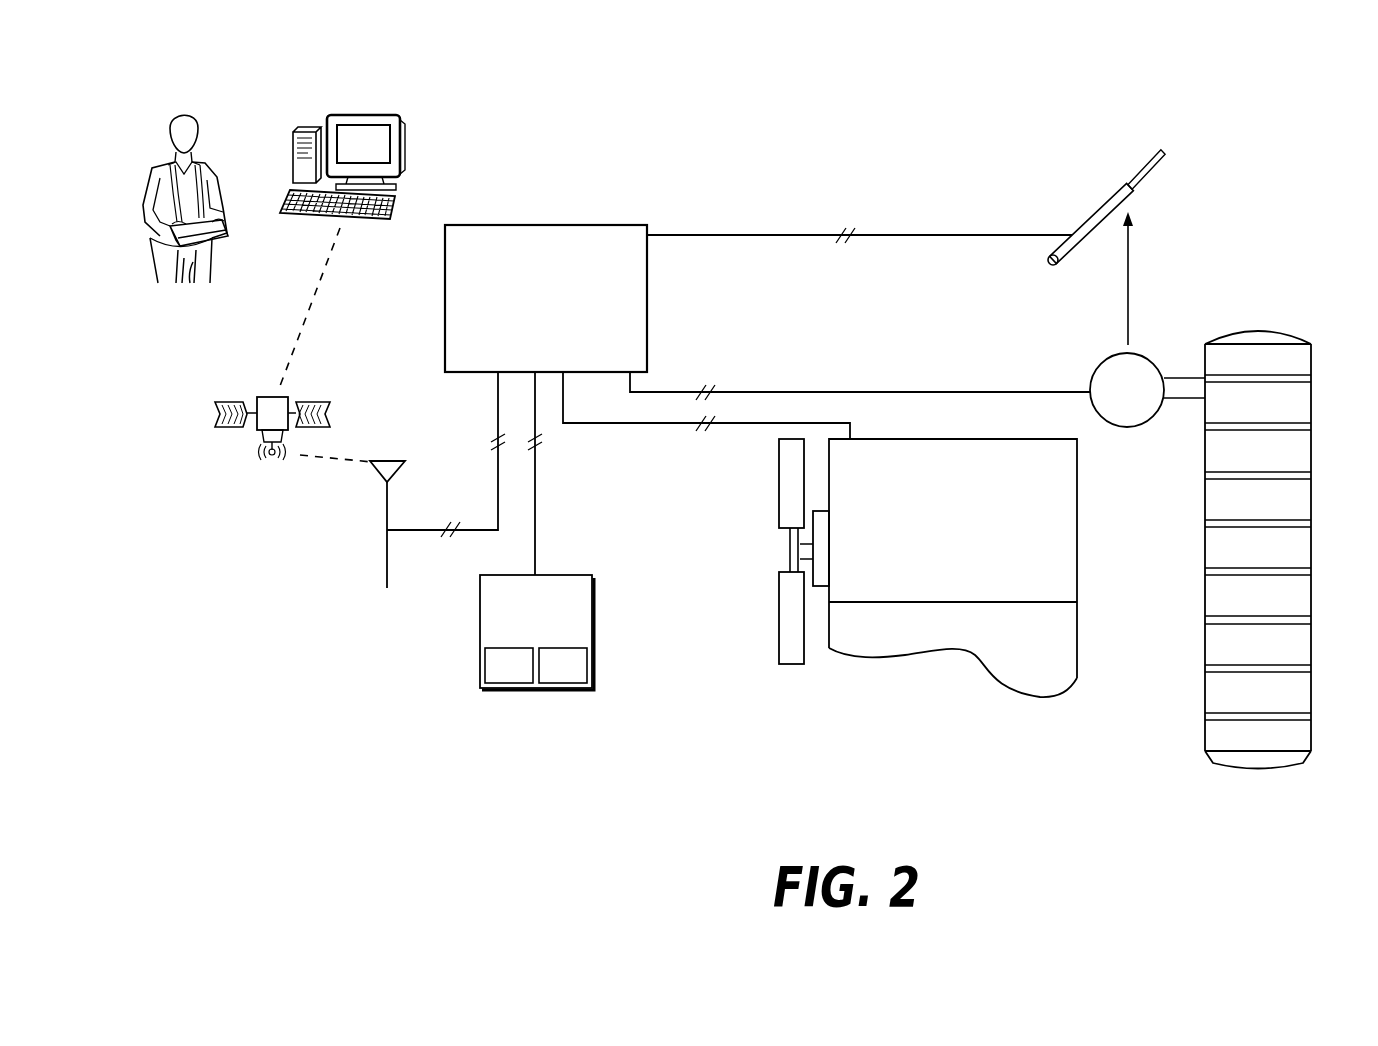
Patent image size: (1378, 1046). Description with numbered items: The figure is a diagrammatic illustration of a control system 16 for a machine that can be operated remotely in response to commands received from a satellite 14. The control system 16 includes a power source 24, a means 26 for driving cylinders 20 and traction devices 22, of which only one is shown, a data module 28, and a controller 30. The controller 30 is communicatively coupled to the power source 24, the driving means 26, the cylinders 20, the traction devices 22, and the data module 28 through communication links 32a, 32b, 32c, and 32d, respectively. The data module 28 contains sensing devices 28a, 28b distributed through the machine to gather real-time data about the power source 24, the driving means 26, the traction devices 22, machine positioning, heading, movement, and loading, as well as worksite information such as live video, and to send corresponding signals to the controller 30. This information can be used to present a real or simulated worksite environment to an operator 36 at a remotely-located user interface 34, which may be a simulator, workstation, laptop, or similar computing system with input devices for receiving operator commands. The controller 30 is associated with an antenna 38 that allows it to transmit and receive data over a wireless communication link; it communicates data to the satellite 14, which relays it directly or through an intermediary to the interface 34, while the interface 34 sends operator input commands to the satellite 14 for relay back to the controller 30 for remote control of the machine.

The satellite 14 is at (203, 411).
The control system 16 is at (779, 148).
The cylinders 20 is at (1073, 219).
The traction devices 22 is at (1321, 342).
The power source 24 is at (928, 568).
The means for driving 26 is at (1082, 374).
The data module 28 is at (537, 632).
The sensing device 28a is at (509, 665).
The sensing device 28b is at (563, 665).
The controller 30 is at (546, 298).
The communication link 32a is at (612, 424).
The communication link 32b is at (842, 391).
The communication link 32c is at (905, 236).
The communication link 32d is at (536, 520).
The user interface 34 is at (280, 133).
The operator 36 is at (148, 160).
The antenna 38 is at (363, 502).